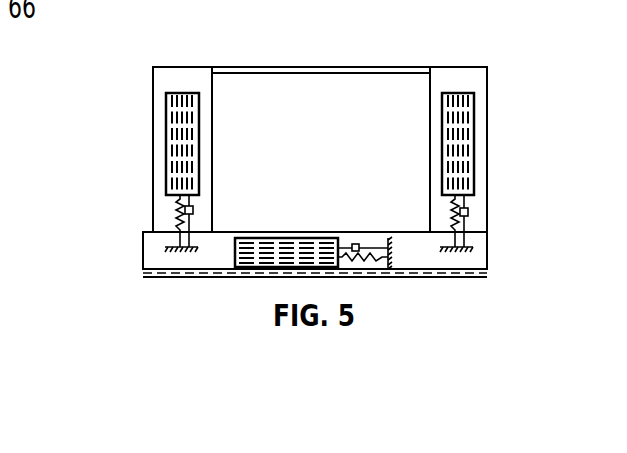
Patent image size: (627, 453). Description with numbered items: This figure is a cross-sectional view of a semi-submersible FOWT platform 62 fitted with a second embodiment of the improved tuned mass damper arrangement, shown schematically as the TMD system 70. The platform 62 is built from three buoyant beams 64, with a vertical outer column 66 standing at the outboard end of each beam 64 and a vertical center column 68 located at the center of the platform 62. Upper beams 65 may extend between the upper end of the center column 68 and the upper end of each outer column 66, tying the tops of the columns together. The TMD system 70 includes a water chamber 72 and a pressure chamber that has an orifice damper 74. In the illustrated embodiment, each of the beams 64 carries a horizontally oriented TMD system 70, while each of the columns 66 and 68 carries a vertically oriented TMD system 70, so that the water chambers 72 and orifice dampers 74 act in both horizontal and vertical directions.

The semi-submersible FOWT platform 62 is at (104, 161).
The buoyant beam 64 is at (155, 248).
The upper beam 65 is at (370, 68).
The vertical outer column 66 is at (478, 79).
The vertical center column 68 is at (162, 79).
The TMD system 70 is at (198, 67).
The water chamber 72 is at (192, 112).
The orifice damper 74 is at (196, 211).